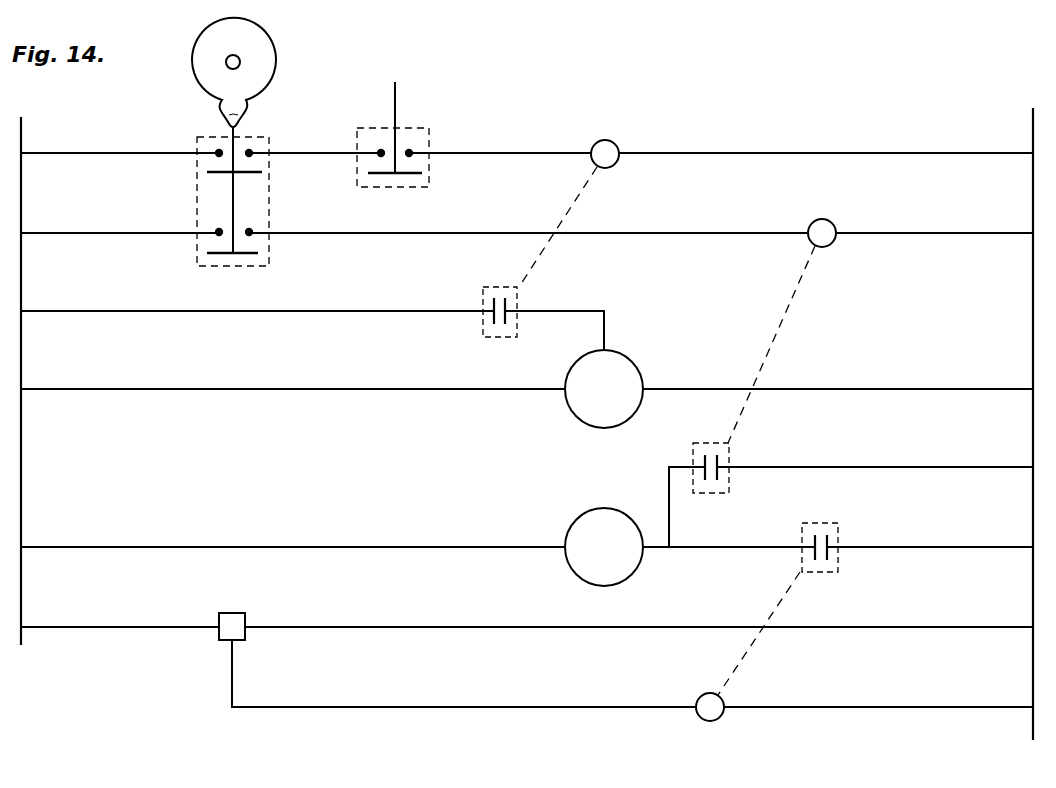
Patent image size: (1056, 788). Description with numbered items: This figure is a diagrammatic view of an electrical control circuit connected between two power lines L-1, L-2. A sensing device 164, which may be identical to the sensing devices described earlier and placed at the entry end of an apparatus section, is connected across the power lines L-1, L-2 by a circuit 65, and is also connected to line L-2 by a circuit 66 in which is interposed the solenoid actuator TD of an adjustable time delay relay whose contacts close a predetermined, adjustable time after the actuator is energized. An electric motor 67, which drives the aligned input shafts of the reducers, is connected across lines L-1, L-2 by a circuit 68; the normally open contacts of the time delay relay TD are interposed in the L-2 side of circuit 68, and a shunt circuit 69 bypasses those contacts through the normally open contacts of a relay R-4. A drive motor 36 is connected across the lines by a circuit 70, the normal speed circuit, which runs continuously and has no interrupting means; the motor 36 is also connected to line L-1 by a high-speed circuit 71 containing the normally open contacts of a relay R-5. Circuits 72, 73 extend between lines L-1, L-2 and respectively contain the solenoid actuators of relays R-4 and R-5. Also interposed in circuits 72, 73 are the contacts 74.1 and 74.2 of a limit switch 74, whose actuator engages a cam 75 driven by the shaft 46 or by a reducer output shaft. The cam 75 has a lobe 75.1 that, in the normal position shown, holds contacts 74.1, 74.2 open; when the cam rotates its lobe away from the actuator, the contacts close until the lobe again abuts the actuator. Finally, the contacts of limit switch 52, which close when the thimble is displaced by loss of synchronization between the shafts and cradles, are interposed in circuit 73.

The shaft 46 is at (238, 57).
The cam 75 is at (277, 52).
The lobe 75.1 is at (240, 114).
The limit switch 74 is at (196, 197).
The contacts 74.1 is at (214, 240).
The contacts 74.2 is at (224, 146).
The limit switch 52 is at (431, 135).
The relay R-5 is at (616, 145).
The relay R-4 is at (835, 226).
The solenoid actuator of time delay relay TD is at (716, 720).
The circuit 73 is at (800, 153).
The circuit 72 is at (720, 233).
The circuit 71 is at (329, 312).
The circuit 70 is at (334, 390).
The shunt circuit 69 is at (903, 467).
The circuit 68 is at (415, 547).
The electric motor 67 is at (603, 512).
The drive motor 36 is at (638, 370).
The circuit 65 is at (413, 627).
The circuit 66 is at (448, 707).
The sensing device 164 is at (232, 622).
The power line L-1 is at (21, 452).
The power line L-2 is at (1033, 303).